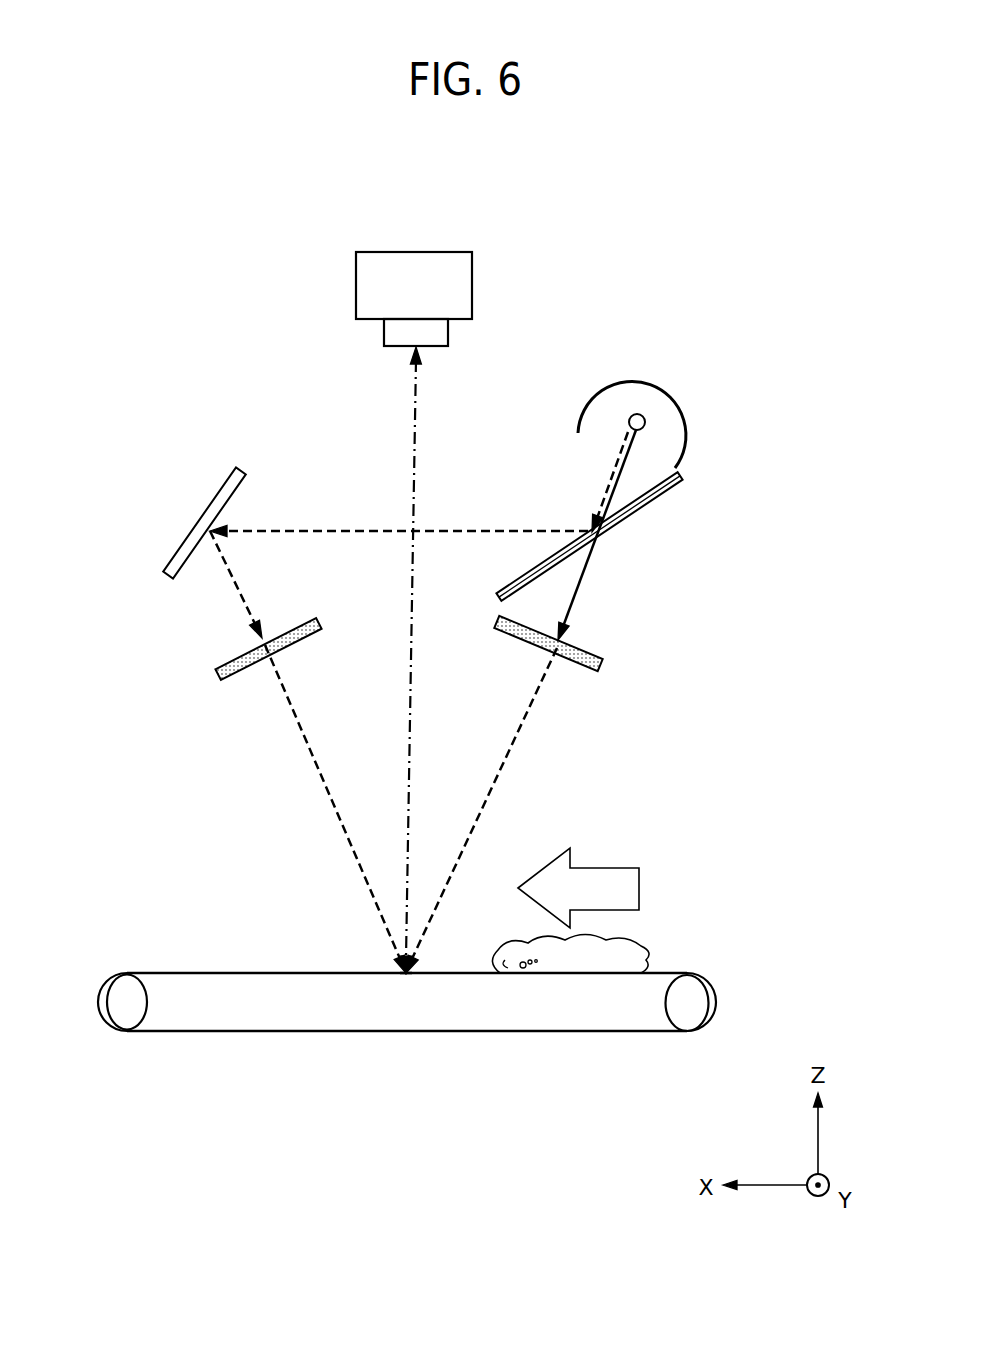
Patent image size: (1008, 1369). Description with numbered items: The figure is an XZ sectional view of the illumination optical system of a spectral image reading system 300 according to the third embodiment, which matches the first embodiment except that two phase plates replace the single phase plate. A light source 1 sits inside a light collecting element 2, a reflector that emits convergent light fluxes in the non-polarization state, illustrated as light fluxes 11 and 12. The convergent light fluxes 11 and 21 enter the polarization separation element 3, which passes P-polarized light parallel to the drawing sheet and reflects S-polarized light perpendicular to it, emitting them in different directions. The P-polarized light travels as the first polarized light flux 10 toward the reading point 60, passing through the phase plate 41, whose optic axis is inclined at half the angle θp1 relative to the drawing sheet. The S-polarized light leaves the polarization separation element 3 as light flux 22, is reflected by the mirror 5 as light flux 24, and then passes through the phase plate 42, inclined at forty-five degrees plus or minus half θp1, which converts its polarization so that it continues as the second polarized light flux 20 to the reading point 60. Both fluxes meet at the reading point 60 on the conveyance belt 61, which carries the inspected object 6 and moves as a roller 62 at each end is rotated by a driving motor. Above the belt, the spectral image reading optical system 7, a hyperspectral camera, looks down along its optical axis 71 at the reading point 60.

The spectral image reading system 300 is at (633, 265).
The spectral image reading optical system 7 is at (356, 286).
The optical axis 71 is at (408, 797).
The light source 1 is at (641, 414).
The light collecting element 2 is at (684, 412).
The convergent light flux 21 is at (604, 484).
The light flux 11 is at (620, 466).
The light flux 12 is at (580, 577).
The polarization separation element 3 is at (684, 477).
The light flux 22 is at (500, 531).
The optical-path changing element 5 is at (200, 518).
The light flux 24 is at (243, 595).
The phase plate 42 is at (217, 662).
The second polarized light flux 20 is at (295, 715).
The phase plate 41 is at (602, 662).
The first polarized light flux 10 is at (513, 727).
The inspected object 6 is at (633, 947).
The reading point 60 is at (405, 975).
The conveyance belt 61 is at (322, 1020).
The roller 62 is at (123, 1015).